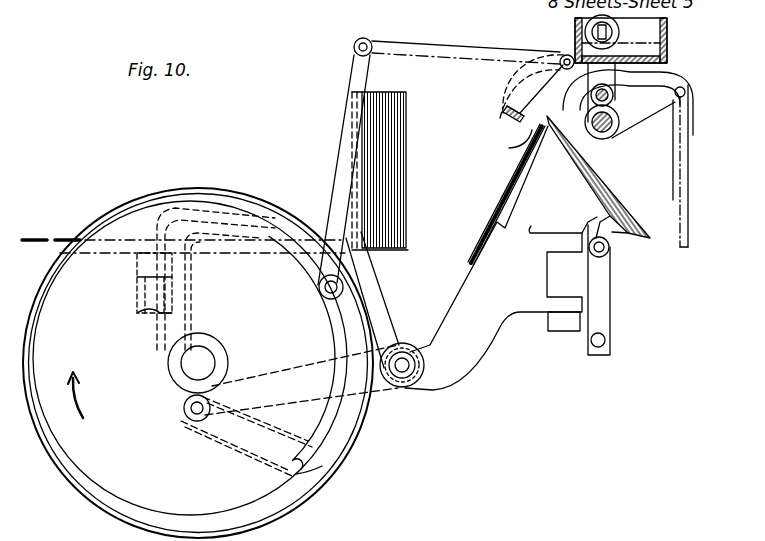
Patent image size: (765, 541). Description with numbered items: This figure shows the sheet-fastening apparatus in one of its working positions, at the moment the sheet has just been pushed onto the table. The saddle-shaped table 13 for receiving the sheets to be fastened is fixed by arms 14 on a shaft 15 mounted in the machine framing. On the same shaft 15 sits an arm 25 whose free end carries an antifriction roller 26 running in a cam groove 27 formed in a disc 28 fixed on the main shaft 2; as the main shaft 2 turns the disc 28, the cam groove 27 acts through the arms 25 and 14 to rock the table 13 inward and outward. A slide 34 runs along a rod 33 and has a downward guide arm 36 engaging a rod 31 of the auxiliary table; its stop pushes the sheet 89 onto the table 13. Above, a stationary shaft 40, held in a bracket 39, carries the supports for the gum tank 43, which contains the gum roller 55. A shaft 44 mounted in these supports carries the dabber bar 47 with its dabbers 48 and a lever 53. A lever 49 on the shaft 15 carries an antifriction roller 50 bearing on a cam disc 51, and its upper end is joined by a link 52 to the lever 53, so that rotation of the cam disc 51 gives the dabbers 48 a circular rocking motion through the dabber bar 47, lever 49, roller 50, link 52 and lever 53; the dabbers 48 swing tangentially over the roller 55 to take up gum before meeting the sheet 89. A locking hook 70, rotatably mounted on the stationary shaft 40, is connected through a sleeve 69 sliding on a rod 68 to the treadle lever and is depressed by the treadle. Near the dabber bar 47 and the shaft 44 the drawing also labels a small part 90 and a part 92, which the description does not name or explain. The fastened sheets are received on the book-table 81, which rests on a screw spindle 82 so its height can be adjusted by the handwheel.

The main shaft 2 is at (202, 360).
The saddle-shaped table 13 is at (590, 182).
The arms 14 is at (497, 280).
The shaft 15 is at (402, 389).
The arm 25 is at (255, 378).
The antifriction roller 26 is at (190, 418).
The cam groove 27 is at (206, 188).
The disc 28 is at (107, 512).
The rod 31 is at (606, 340).
The rod 33 is at (610, 250).
The slide 34 is at (618, 232).
The guide arm 36 is at (598, 303).
The bracket 39 is at (585, 92).
The stationary shaft 40 is at (620, 124).
The gum tank 43 is at (668, 36).
The shaft 44 is at (615, 100).
The dabber bar 47 is at (505, 112).
The dabbers 48 is at (503, 118).
The lever 49 is at (385, 336).
The antifriction roller 50 is at (318, 292).
The cam disc 51 is at (300, 186).
The link 52 is at (465, 47).
The lever 53 is at (525, 140).
The roller 55 is at (622, 22).
The rod 68 is at (689, 240).
The sleeve 69 is at (690, 200).
The locking hook 70 is at (692, 80).
The book-table 81 is at (403, 250).
The screw spindle 82 is at (137, 290).
The sheet 89 is at (612, 212).
The hook 90 is at (509, 148).
The ring 92 is at (565, 56).